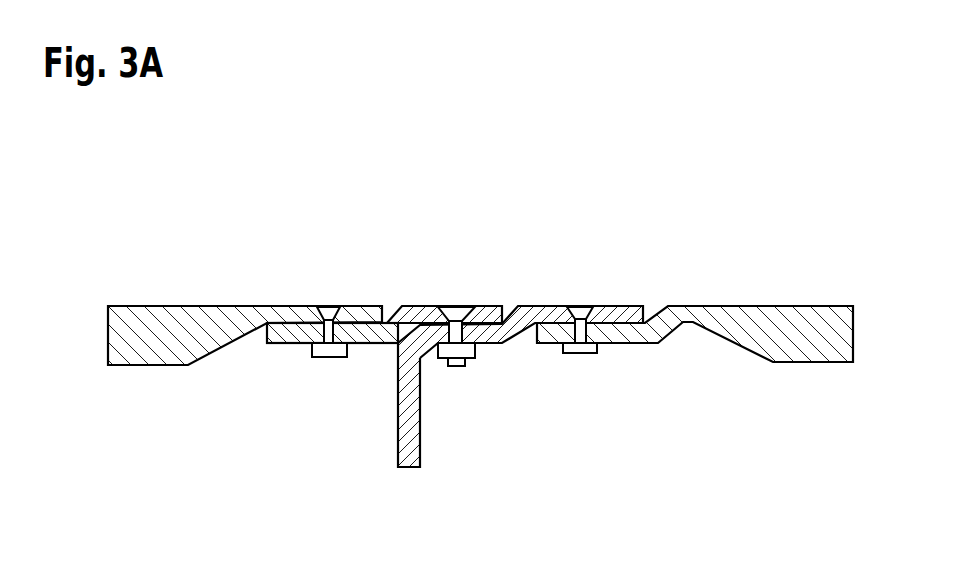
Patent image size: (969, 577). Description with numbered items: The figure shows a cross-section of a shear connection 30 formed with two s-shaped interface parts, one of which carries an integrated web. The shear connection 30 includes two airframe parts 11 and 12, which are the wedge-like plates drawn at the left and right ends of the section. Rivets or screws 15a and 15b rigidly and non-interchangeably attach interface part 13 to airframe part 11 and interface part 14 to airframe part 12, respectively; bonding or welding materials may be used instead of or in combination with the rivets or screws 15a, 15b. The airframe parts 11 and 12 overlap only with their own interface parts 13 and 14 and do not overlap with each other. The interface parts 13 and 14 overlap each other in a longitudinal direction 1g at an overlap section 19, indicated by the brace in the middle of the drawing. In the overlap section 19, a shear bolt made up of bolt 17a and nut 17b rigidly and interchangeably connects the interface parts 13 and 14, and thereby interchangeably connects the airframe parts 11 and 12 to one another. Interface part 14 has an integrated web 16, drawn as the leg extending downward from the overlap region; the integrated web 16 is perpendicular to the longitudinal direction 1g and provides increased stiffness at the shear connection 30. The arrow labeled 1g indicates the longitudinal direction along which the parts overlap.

The airframe part 11 is at (265, 306).
The airframe part 12 is at (772, 317).
The interface part 13 is at (290, 343).
The interface part 14 is at (618, 316).
The rivet or screw 15a is at (328, 357).
The rivet or screw 15b is at (582, 353).
The integrated web 16 is at (412, 455).
The bolt 17a is at (492, 316).
The nut 17b is at (477, 350).
The overlap section 19 is at (497, 300).
The shear connection 30 is at (508, 236).
The longitudinal direction 1g is at (795, 408).